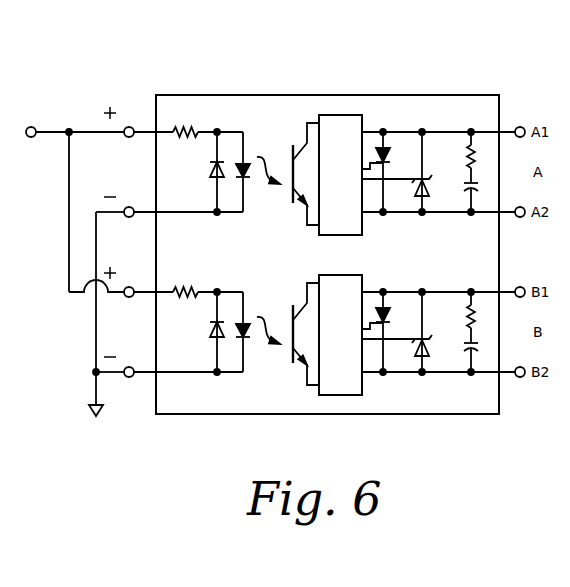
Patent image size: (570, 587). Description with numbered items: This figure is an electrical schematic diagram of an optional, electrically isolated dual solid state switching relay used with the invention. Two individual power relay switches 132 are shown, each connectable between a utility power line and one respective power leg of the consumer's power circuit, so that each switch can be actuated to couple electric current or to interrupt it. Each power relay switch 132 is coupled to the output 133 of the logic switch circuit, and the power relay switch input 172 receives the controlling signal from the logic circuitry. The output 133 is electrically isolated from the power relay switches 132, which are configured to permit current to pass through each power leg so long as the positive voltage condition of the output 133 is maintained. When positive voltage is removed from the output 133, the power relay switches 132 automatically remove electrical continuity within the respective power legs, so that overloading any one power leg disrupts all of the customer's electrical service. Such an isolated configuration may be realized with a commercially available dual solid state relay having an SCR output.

The power relay switch input 172 is at (33, 126).
The power relay switch 132 is at (340, 115).
The output 133 is at (253, 148).